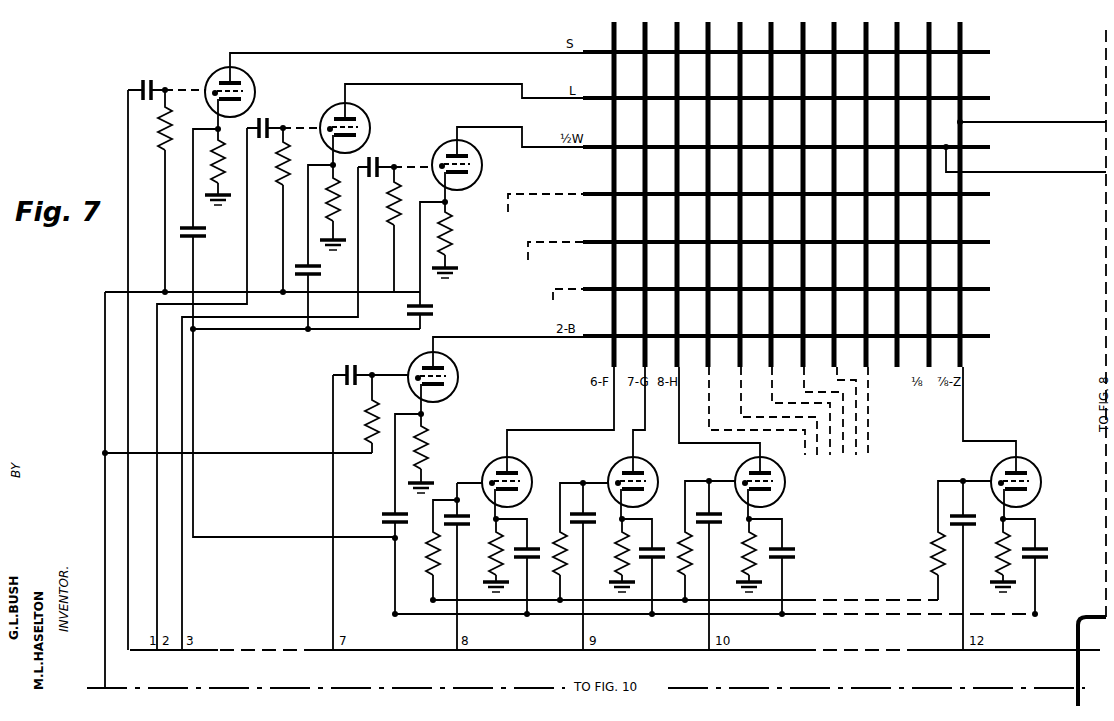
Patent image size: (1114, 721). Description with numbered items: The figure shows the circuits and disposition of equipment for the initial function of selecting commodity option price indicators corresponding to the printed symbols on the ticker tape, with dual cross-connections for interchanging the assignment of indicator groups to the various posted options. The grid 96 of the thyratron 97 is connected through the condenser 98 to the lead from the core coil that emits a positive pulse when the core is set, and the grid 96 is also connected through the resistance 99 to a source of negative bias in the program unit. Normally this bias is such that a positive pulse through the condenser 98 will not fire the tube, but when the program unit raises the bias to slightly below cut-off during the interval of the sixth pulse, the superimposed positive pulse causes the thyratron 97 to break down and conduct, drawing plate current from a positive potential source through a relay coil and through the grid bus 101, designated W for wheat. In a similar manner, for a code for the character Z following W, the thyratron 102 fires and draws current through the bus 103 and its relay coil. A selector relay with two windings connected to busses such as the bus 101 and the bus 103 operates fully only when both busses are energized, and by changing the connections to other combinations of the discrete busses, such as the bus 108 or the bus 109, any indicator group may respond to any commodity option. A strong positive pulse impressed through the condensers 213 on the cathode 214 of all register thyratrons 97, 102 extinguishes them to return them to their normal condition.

The discrete bus 108 is at (612, 75).
The discrete bus 109 is at (633, 98).
The bus Z 103 is at (962, 109).
The grid bus W 101 is at (966, 145).
The condenser 98 is at (377, 164).
The grid 96 is at (404, 166).
The thyratron 97 is at (481, 158).
The resistance 99 is at (395, 203).
The cathode 214 is at (448, 204).
The condenser 213 is at (429, 316).
The thyratron 102 is at (1025, 460).